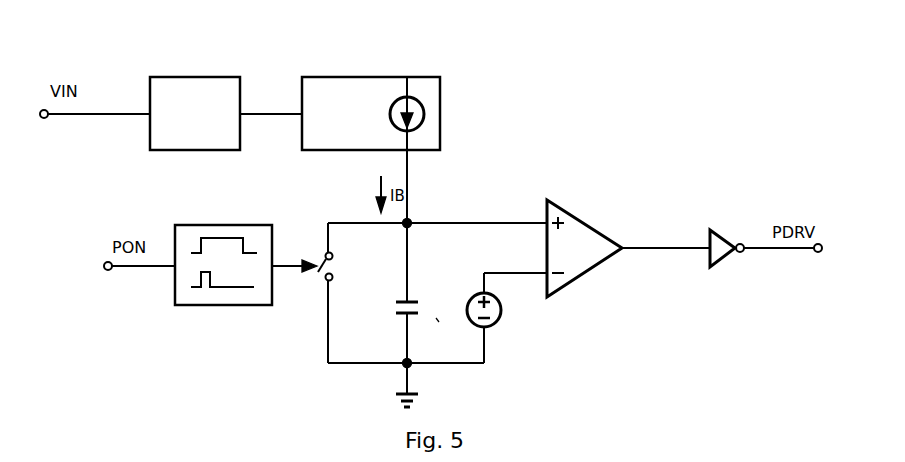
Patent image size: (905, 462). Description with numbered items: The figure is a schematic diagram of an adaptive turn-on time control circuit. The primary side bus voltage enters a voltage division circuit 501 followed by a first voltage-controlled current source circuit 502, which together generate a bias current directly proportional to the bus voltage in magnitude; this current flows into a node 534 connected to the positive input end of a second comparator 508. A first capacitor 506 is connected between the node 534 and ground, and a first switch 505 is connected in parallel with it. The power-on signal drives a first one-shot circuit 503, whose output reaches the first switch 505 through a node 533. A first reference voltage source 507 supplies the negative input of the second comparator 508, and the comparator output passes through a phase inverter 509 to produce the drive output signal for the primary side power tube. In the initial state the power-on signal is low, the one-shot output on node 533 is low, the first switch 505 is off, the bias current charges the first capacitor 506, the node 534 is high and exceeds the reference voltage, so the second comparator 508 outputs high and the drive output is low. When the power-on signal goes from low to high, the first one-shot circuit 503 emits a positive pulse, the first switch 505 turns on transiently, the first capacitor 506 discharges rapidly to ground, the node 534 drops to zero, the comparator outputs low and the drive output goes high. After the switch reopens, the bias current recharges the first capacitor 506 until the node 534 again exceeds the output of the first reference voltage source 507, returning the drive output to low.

The voltage division circuit 501 is at (208, 76).
The first voltage-controlled current source circuit 502 is at (424, 77).
The first one-shot circuit 503 is at (215, 305).
The first switch 505 is at (342, 265).
The first capacitor 506 is at (422, 322).
The first reference voltage source 507 is at (512, 317).
The second comparator 508 is at (598, 226).
The phase inverter 509 is at (727, 230).
The node 533 is at (290, 262).
The node 534 is at (410, 220).